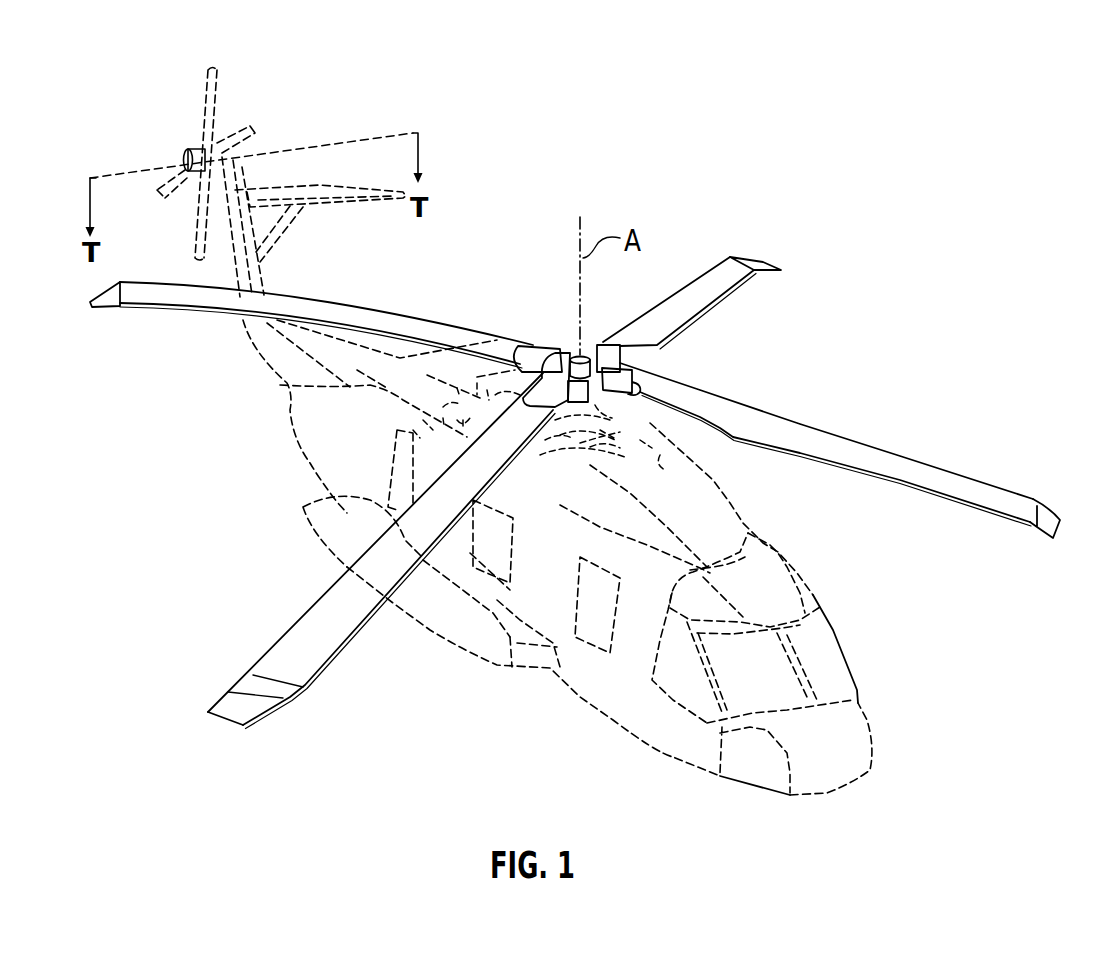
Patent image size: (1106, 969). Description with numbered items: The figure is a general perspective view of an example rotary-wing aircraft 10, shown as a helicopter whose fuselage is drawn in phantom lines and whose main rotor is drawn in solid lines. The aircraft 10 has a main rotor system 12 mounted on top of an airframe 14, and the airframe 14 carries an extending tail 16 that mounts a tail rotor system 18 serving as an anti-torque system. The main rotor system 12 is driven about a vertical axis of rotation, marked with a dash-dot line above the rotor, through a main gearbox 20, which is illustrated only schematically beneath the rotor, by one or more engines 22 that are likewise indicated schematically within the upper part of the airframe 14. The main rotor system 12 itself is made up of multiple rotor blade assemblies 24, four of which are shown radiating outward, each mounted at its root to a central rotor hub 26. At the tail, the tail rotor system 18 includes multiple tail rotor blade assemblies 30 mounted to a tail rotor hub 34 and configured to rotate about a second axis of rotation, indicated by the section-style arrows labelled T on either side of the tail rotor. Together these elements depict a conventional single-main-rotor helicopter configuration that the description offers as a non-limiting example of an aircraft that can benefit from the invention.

The rotary-wing aircraft 10 is at (668, 356).
The main rotor system 12 is at (566, 337).
The airframe 14 is at (533, 597).
The extending tail 16 is at (243, 327).
The tail rotor system 18 is at (188, 137).
The main gearbox 20 is at (627, 457).
The engines 22 is at (465, 402).
The rotor blade assemblies 24 is at (888, 456).
The rotor hub 26 is at (640, 371).
The tail rotor blade assemblies 30 is at (161, 195).
The tail rotor hub 34 is at (184, 159).